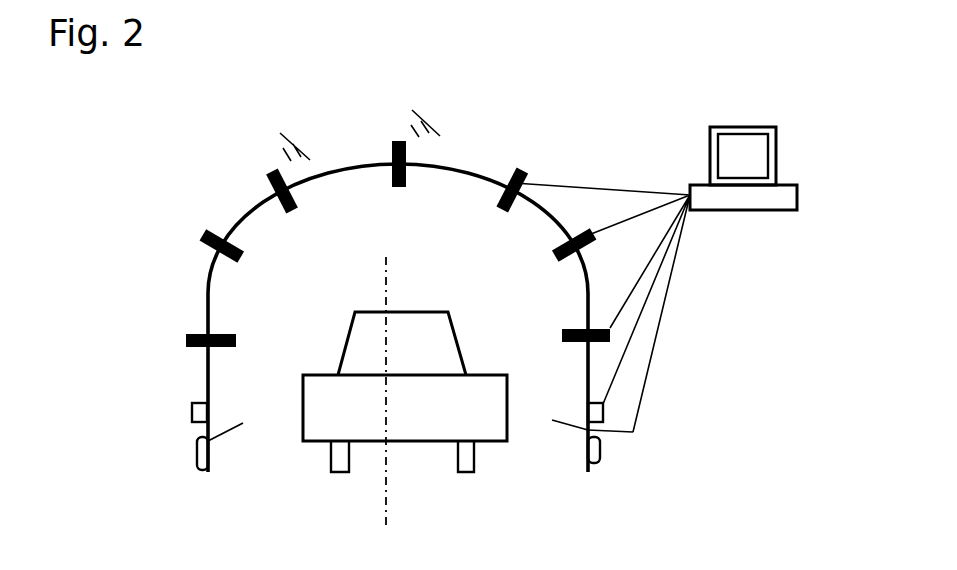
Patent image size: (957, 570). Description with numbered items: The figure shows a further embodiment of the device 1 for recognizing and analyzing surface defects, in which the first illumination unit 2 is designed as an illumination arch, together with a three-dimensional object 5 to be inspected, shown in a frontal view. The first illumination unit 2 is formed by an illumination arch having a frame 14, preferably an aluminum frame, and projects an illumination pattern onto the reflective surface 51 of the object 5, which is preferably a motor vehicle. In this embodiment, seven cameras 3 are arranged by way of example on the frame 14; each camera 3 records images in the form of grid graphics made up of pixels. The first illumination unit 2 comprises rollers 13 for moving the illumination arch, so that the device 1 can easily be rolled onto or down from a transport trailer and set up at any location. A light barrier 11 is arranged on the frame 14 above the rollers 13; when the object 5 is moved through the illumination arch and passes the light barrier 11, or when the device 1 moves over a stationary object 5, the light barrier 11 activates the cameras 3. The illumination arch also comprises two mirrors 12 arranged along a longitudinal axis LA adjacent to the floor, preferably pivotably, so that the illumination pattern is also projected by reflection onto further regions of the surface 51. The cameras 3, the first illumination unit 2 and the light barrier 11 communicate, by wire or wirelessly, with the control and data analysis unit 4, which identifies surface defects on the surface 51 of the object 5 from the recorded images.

The device 1 is at (606, 102).
The first illumination unit 2 is at (369, 255).
The camera 3 is at (407, 158).
The control and data analysis unit 4 is at (752, 160).
The three-dimensional object 5 is at (403, 412).
The surface 51 is at (431, 302).
The light barrier 11 is at (192, 412).
The mirror 12 is at (258, 428).
The roller 13 is at (197, 463).
The frame 14 is at (206, 288).
The longitudinal axis LA is at (382, 527).